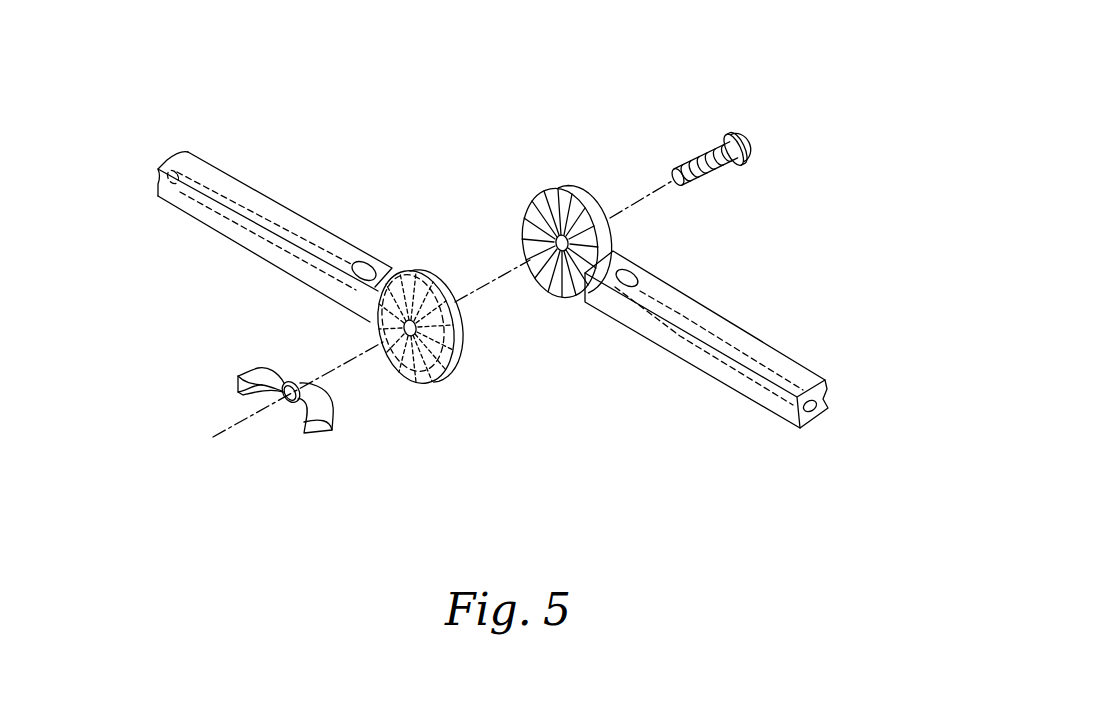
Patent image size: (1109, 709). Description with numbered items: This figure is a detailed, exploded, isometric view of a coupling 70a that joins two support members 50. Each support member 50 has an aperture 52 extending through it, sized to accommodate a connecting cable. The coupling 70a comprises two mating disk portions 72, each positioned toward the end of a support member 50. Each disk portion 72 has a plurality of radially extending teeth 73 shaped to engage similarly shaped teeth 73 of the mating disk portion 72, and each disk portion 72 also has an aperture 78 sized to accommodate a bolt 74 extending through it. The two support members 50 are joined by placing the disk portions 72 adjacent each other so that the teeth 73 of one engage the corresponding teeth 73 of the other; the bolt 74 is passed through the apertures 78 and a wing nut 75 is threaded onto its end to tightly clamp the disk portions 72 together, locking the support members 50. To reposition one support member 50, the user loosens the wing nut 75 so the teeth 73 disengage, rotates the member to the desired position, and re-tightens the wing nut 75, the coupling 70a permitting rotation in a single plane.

The coupling 70a is at (441, 146).
The support member 50 is at (328, 224).
The aperture 52 is at (240, 200).
The disk portion 72 is at (433, 383).
The teeth 73 is at (466, 332).
The bolt 74 is at (758, 143).
The wing nut 75 is at (313, 437).
The aperture 78 is at (413, 336).